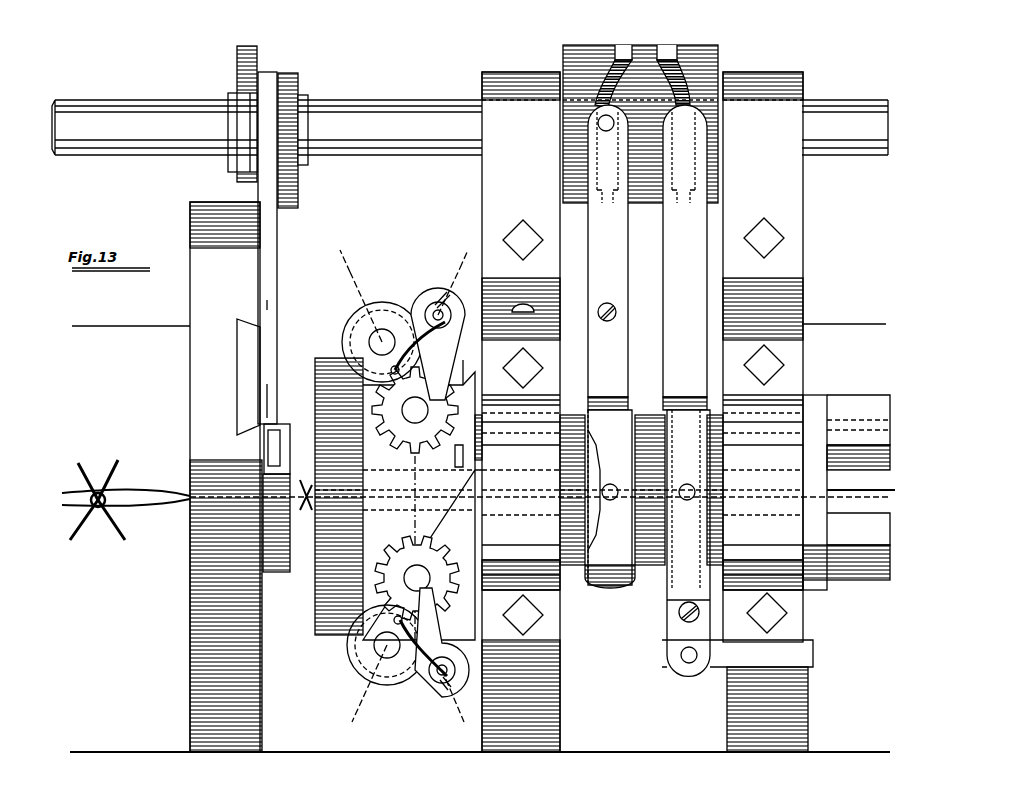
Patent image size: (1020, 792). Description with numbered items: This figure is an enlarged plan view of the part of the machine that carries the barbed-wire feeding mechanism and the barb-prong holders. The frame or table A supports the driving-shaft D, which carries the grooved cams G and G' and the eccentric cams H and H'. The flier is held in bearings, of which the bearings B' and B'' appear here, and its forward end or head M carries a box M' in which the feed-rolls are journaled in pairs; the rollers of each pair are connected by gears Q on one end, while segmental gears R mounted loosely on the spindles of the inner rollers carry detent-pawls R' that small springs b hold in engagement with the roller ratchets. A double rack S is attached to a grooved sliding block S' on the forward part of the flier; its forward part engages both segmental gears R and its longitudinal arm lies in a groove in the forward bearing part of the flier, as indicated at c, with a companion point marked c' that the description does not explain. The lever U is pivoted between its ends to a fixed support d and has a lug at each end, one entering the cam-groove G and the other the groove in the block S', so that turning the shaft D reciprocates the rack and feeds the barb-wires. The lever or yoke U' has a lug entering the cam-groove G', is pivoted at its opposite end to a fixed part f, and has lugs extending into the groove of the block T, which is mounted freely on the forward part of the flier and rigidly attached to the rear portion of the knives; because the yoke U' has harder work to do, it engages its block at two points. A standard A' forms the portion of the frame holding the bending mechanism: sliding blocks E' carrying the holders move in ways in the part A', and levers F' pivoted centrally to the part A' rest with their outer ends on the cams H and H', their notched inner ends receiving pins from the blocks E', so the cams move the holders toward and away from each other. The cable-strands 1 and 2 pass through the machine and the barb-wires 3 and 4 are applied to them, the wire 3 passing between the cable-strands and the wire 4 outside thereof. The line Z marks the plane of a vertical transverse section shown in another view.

The driving-shaft D is at (470, 127).
The eccentric cam H is at (234, 114).
The eccentric cam H' is at (302, 132).
The lever F' is at (279, 322).
The frame or table A is at (645, 412).
The standard A' is at (226, 477).
The sliding block E' is at (248, 377).
The grooved cam G is at (640, 115).
The grooved cam G' is at (673, 66).
The groove c is at (606, 133).
The pivot pin c' is at (685, 133).
The fixed support d is at (607, 299).
The lever U is at (610, 346).
The lever or yoke U' is at (686, 399).
The fixed part f is at (737, 653).
The bearing B'' is at (517, 484).
The bearing B' is at (809, 482).
The grooved block T is at (660, 575).
The grooved sliding block S' is at (626, 593).
The double rack S is at (475, 500).
The head of the flier M is at (339, 496).
The box M' is at (376, 493).
The gear Q is at (415, 493).
The spring b is at (412, 493).
The detent-pawl R' is at (434, 493).
The segmental gear R is at (427, 491).
The section line z z Z is at (403, 492).
The cable-strand 1 is at (476, 488).
The cable-strand 2 is at (132, 509).
The barb-wire 3 is at (95, 495).
The barb-wire 4 is at (97, 502).